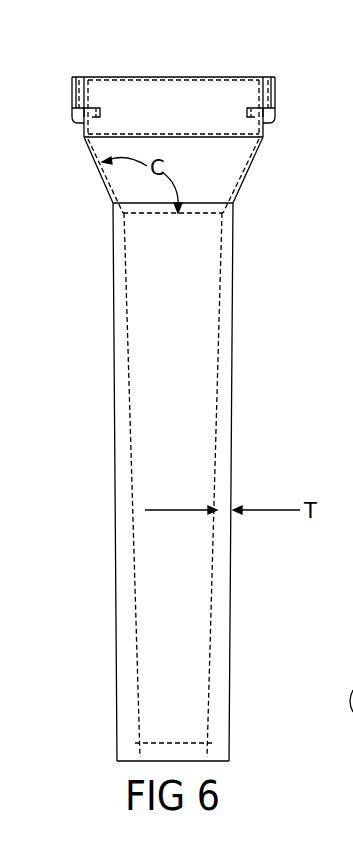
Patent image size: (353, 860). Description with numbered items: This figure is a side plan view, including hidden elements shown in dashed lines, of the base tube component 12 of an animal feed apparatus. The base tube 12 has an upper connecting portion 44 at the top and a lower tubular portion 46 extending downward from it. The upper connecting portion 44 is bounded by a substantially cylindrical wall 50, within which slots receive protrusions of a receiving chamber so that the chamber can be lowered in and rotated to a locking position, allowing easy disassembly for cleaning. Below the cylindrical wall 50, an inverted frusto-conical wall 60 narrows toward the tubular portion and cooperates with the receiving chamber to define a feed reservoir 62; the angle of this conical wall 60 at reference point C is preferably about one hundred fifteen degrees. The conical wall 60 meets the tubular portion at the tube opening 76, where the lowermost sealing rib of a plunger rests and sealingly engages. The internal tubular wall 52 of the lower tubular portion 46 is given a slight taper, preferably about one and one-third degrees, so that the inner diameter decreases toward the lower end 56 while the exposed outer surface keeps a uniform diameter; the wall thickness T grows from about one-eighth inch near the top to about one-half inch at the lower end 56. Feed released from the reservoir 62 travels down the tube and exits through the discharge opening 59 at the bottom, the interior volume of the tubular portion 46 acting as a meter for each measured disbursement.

The base tube component 12 is at (277, 58).
The upper connecting portion 44 is at (52, 76).
The lower tubular portion 46 is at (52, 202).
The substantially cylindrical wall 50 is at (264, 107).
The internal tubular wall 52 is at (232, 318).
The lower end 56 is at (352, 690).
The discharge opening 59 is at (193, 762).
The inverted frusto-conical wall 60 is at (250, 169).
The feed reservoir 62 is at (208, 166).
The tube opening 76 is at (237, 193).